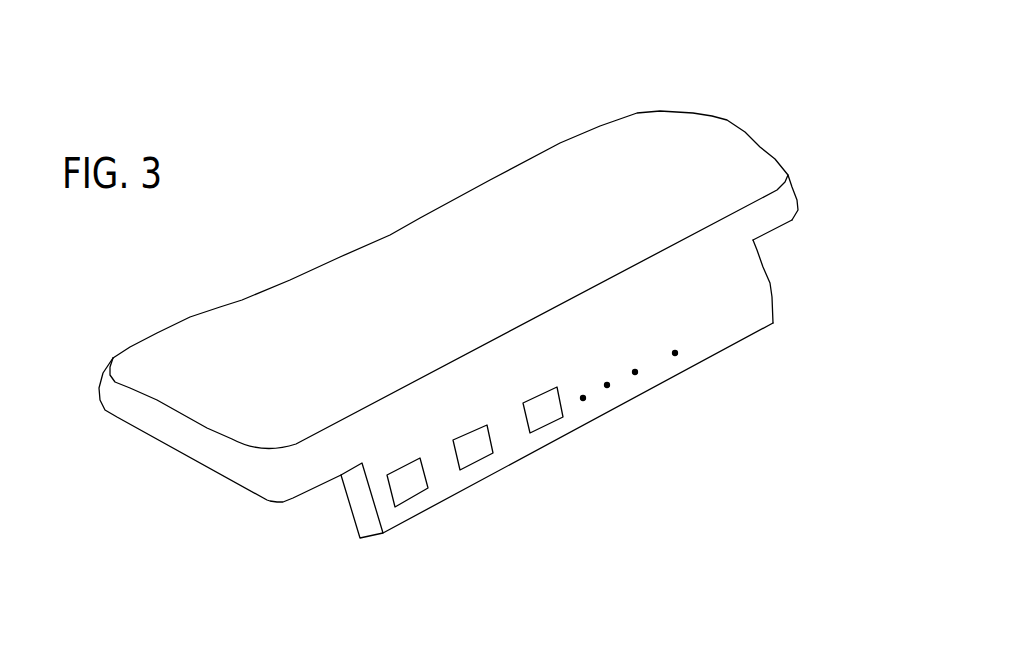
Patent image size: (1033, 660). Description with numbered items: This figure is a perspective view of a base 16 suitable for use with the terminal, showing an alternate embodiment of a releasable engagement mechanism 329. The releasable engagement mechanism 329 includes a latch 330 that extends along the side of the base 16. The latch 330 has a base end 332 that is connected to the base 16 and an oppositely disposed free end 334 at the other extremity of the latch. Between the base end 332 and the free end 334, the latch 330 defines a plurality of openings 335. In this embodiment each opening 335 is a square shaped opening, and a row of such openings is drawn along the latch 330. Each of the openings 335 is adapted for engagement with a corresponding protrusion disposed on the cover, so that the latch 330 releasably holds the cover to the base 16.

The base 16 is at (740, 117).
The releasable engagement mechanism 329 is at (774, 260).
The latch 330 is at (773, 294).
The base end 332 is at (378, 478).
The free end 334 is at (422, 517).
The openings 335 is at (400, 492).